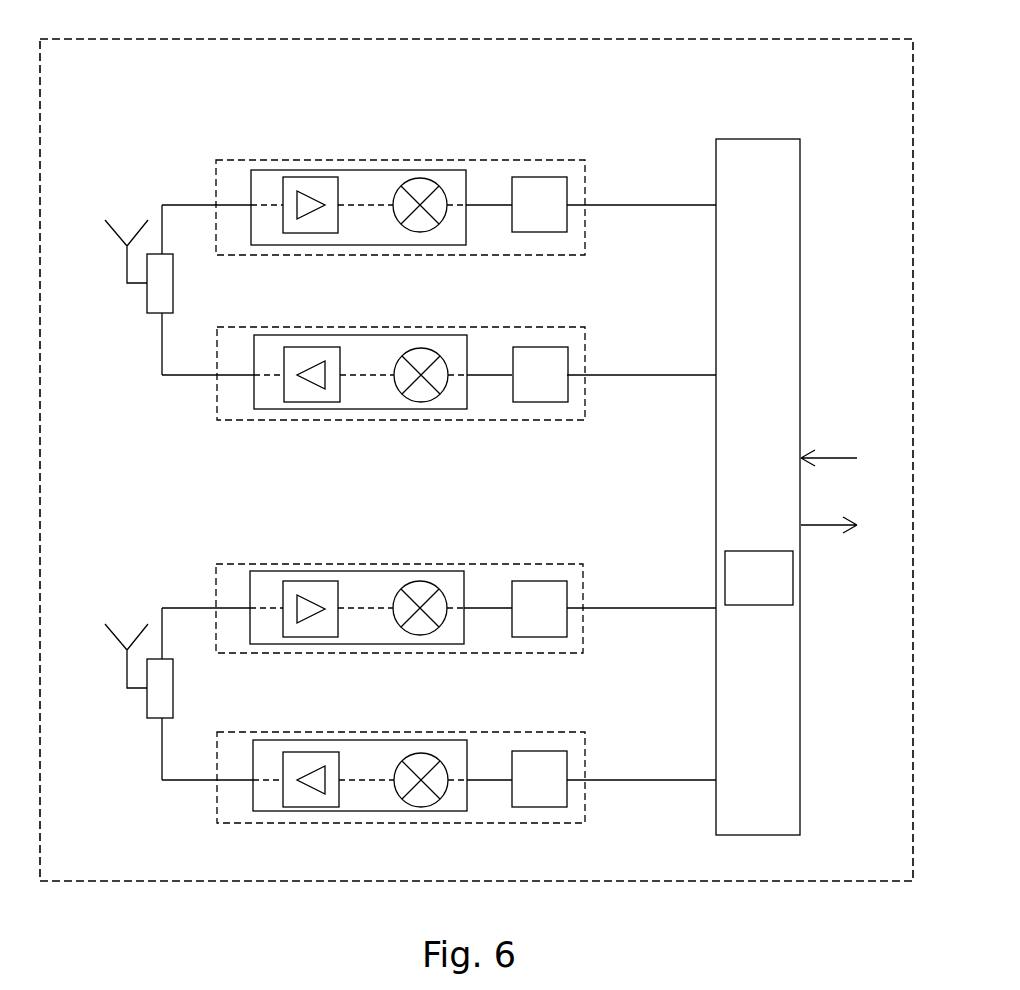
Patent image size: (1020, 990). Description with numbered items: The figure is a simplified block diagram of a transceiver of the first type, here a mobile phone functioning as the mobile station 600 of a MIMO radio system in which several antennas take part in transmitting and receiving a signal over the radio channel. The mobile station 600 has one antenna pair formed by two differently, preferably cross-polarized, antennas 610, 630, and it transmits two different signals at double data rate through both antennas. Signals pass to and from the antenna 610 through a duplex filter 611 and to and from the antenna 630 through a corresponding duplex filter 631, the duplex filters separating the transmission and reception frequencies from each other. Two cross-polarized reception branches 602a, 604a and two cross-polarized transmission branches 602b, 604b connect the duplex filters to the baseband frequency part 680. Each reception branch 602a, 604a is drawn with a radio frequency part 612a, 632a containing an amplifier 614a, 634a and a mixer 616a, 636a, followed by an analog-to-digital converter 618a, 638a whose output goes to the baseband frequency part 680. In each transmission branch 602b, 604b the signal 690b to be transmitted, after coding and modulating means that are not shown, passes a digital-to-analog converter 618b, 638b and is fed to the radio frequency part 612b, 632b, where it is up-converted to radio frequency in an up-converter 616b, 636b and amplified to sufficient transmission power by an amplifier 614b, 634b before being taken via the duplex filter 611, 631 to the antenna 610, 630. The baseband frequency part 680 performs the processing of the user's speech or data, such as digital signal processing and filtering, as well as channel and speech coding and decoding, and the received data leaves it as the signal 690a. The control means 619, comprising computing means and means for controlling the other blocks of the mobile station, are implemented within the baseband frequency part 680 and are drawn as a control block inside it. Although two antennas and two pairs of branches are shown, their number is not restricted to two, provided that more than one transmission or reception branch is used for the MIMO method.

The mobile station 600 is at (128, 881).
The baseband frequency part 680 is at (750, 139).
The control means 619 is at (732, 551).
The output data signal 690a is at (822, 523).
The signal to be transmitted 690b is at (822, 453).
The antenna 610 is at (125, 270).
The duplex filter 611 is at (173, 260).
The reception branch 602a is at (216, 188).
The first receive RF front end 612a is at (251, 180).
The first receive amplifier 614a is at (328, 177).
The first receive mixer 616a is at (420, 178).
The first analog-to-digital converter 618a is at (548, 177).
The transmission branch 602b is at (213, 378).
The radio frequency part 612b is at (254, 398).
The first transmit amplifier 614b is at (327, 402).
The up-converter 616b is at (423, 402).
The first digital-to-analog converter 618b is at (555, 402).
The antenna 630 is at (125, 674).
The second antenna switch 631 is at (173, 668).
The reception branch 604a is at (216, 589).
The second receive RF front end 632a is at (250, 582).
The second receive amplifier 634a is at (328, 581).
The second receive mixer 636a is at (420, 582).
The second analog-to-digital converter 638a is at (548, 581).
The transmission branch 604b is at (213, 783).
The radio frequency part 632b is at (253, 800).
The second transmit amplifier 634b is at (327, 807).
The second transmit mixer 636b is at (423, 807).
The second digital-to-analog converter 638b is at (555, 807).